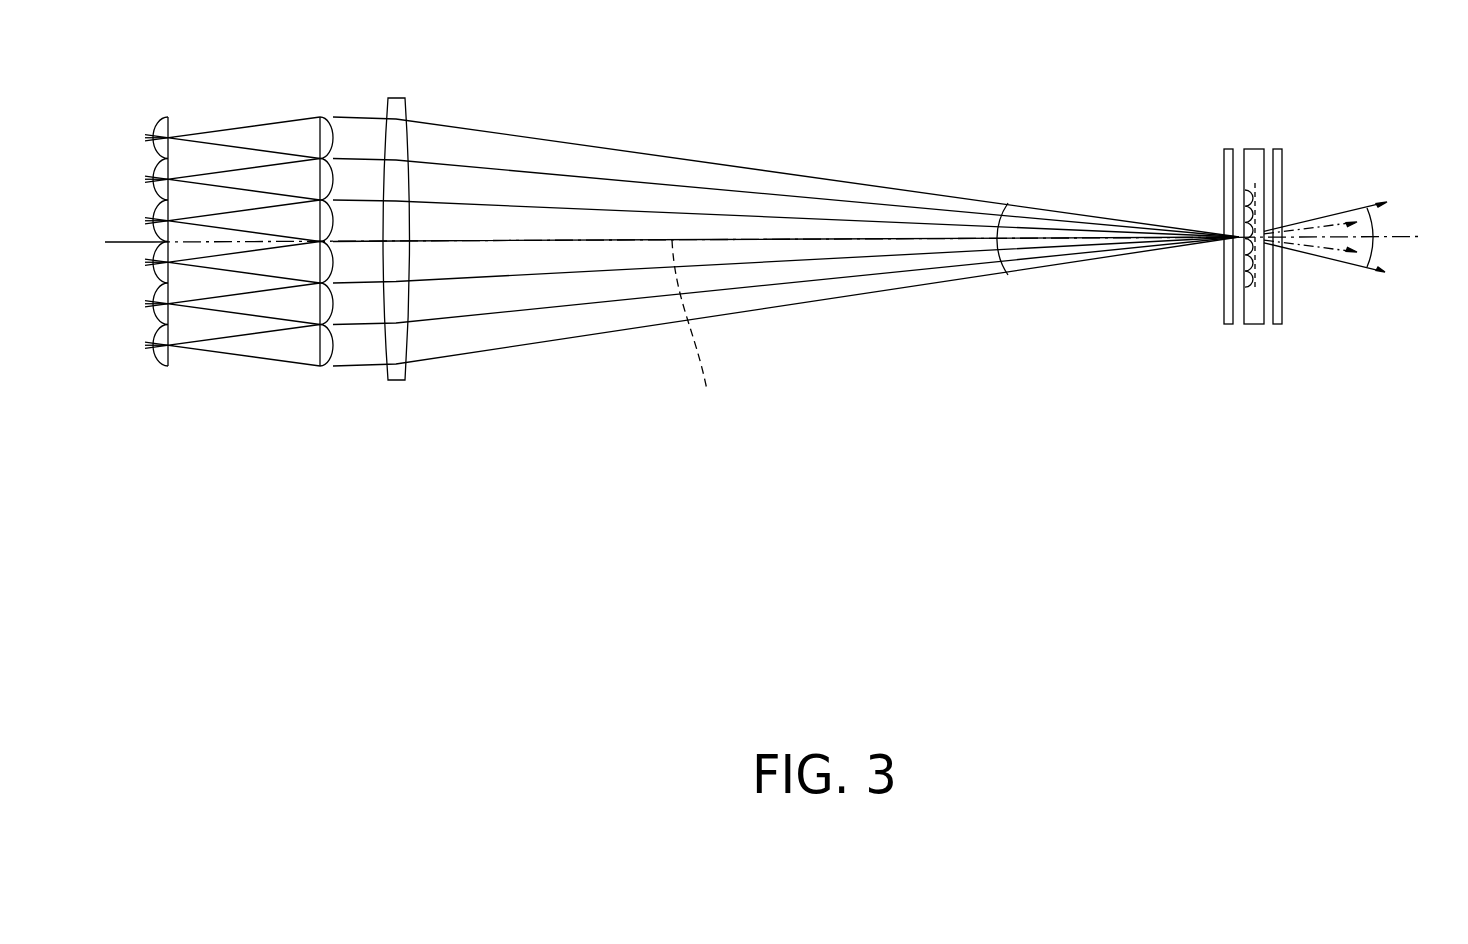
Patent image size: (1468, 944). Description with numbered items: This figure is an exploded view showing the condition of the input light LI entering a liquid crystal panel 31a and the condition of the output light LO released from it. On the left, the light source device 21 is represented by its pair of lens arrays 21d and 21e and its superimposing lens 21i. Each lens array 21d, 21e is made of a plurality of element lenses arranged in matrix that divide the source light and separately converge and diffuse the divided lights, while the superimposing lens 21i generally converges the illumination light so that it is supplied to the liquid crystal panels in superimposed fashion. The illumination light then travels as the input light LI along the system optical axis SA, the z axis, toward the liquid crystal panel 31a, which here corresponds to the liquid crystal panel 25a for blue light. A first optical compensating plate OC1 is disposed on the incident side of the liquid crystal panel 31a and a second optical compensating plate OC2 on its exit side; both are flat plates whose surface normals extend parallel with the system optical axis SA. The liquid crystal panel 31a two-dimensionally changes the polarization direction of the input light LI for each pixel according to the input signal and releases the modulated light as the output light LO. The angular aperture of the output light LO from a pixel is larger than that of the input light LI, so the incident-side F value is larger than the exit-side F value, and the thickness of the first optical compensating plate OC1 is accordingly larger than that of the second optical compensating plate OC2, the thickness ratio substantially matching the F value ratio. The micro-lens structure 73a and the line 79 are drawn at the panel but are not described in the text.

The light source device 21 is at (287, 304).
The lens array 21d is at (168, 366).
The lens array 21e is at (320, 366).
The superimposing lens 21i is at (402, 380).
The input light LI is at (633, 145).
The system optical axis SA is at (698, 332).
The first optical compensating plate OC1 is at (1228, 325).
The liquid crystal panel 31a is at (1240, 275).
The liquid crystal panel for blue light 25a is at (1240, 275).
The micro lens array 73a is at (1247, 210).
The image plane / focal plane 79 is at (1255, 203).
The second optical compensating plate OC2 is at (1278, 325).
The output light LO is at (1323, 260).